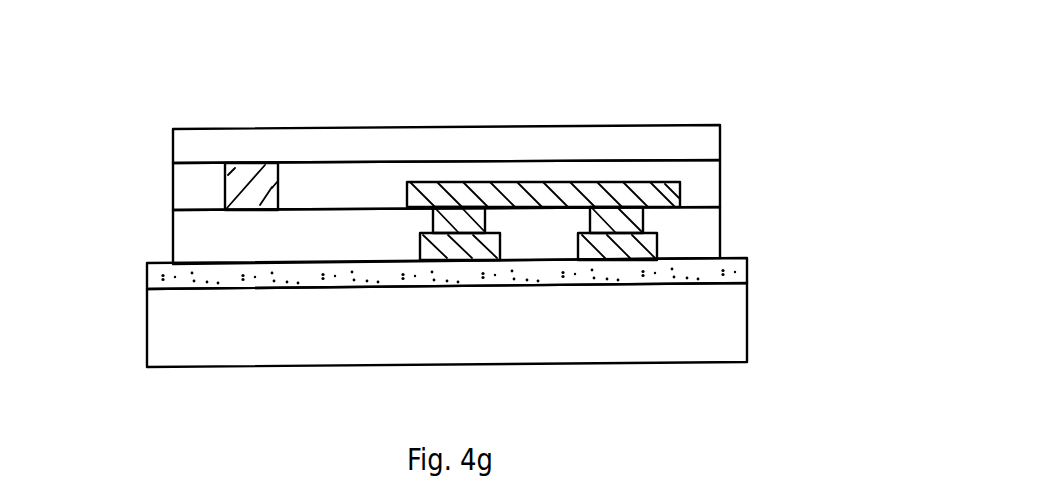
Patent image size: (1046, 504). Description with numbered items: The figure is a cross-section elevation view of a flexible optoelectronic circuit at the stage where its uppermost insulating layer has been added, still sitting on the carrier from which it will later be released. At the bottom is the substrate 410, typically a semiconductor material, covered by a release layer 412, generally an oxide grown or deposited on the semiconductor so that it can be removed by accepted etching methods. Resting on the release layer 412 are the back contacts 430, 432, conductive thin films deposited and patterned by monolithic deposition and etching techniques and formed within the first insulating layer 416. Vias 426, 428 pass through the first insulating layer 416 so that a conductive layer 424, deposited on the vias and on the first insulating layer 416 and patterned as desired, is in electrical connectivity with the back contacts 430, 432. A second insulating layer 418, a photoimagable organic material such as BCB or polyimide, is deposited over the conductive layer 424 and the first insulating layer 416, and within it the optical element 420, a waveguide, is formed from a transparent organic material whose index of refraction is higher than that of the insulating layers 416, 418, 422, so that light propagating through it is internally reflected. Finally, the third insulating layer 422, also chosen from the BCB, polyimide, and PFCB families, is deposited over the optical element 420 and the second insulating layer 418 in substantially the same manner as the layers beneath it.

The substrate 410 is at (720, 322).
The release layer 412 is at (735, 273).
The first insulating layer 416 is at (180, 238).
The second insulating layer 418 is at (180, 190).
The optical element 420 is at (246, 183).
The third insulating layer 422 is at (180, 138).
The conductive layer 424 is at (667, 192).
The via 426 is at (643, 217).
The via 428 is at (480, 220).
The back contact 430 is at (443, 243).
The back contact 432 is at (647, 245).